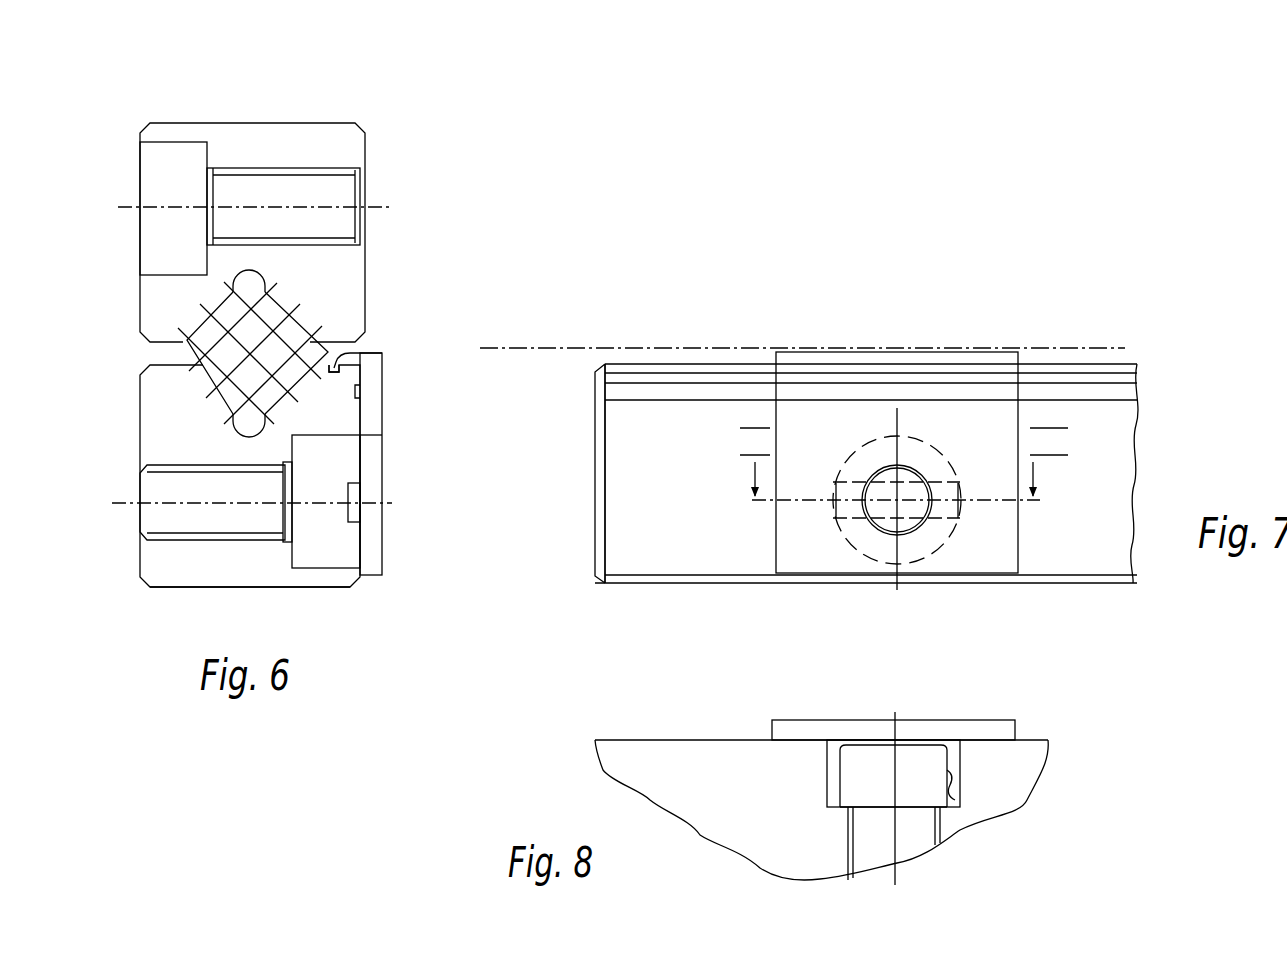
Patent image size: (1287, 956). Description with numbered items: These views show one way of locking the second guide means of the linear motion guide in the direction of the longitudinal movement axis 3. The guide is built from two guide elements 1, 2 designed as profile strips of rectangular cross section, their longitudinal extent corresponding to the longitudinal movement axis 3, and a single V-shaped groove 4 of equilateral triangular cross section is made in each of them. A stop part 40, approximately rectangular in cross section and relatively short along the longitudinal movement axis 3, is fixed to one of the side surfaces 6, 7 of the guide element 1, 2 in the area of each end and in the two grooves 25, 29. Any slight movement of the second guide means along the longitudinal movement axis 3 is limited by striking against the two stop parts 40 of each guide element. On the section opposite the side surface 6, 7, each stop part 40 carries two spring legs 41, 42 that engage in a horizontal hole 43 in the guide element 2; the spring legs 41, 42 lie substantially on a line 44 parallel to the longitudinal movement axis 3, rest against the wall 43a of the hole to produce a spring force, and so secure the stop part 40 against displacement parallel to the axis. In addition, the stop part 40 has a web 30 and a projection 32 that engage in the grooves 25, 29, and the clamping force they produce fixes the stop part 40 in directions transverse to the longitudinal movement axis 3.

In FIG. 6, the guide element 1 is at (338, 112).
In FIG. 6, the guide element 2 is at (344, 596).
In FIG. 7, the guide element 2 is at (1150, 392).
In FIG. 8, the guide element 2 is at (636, 730).
In FIG. 7, the longitudinal movement axis 3 is at (556, 348).
In FIG. 8, the V-shaped groove 4 is at (694, 732).
In FIG. 6, the side surface 6 is at (131, 291).
In FIG. 6, the side surface 7 is at (371, 407).
In FIG. 7, the side surface 7 is at (651, 421).
In FIG. 6, the groove 25 is at (360, 433).
In FIG. 6, the groove 29 is at (356, 396).
In FIG. 6, the web 30 is at (382, 353).
In FIG. 6, the projection 32 is at (334, 358).
In FIG. 6, the stop part 40 is at (404, 419).
In FIG. 7, the stop part 40 is at (1028, 417).
In FIG. 8, the stop part 40 is at (956, 718).
In FIG. 7, the spring leg 41 is at (841, 522).
In FIG. 8, the spring leg 41 is at (828, 773).
In FIG. 7, the spring leg 42 is at (952, 516).
In FIG. 8, the spring leg 42 is at (960, 766).
In FIG. 6, the horizontal hole 43 is at (262, 516).
In FIG. 8, the horizontal hole 43 is at (913, 840).
In FIG. 8, the wall of the hole 43a is at (963, 800).
In FIG. 7, the line 44 is at (1000, 504).